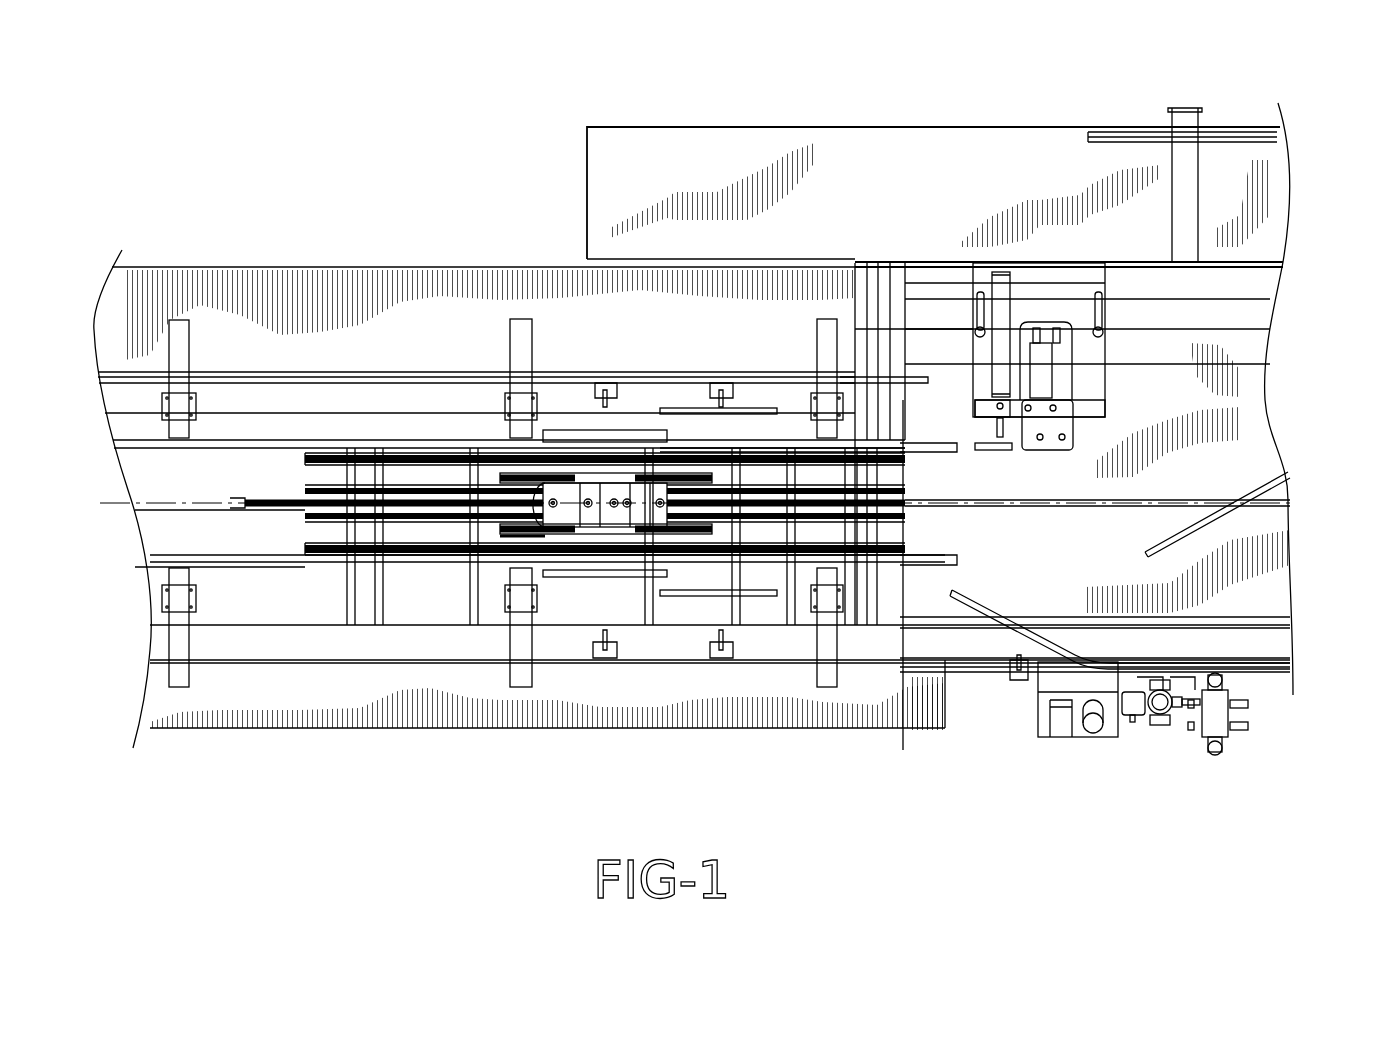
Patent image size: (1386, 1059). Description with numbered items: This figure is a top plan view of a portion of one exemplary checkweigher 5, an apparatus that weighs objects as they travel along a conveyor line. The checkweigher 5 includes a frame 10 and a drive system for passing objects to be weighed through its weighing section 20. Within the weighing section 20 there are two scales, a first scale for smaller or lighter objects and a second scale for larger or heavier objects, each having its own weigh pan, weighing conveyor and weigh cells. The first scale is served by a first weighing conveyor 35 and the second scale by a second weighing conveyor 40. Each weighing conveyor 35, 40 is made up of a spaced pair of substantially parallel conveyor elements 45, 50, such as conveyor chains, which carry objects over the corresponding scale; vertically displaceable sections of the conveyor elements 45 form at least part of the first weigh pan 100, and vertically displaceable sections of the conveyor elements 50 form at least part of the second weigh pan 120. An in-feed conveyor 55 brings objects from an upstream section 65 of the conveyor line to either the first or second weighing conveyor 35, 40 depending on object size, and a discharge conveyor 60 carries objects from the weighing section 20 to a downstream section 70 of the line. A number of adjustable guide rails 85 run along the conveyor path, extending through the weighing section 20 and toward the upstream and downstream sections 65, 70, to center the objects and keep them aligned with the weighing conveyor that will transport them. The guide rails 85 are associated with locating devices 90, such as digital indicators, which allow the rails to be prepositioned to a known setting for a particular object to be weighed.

The checkweigher 5 is at (258, 128).
The frame 10 is at (995, 648).
The weighing section 20 is at (578, 425).
The first weighing conveyor 35 is at (490, 537).
The second weighing conveyor 40 is at (400, 440).
The conveyor elements 45 is at (508, 470).
The conveyor elements 50 is at (328, 456).
The in-feed conveyor 55 is at (297, 525).
The discharge conveyor 60 is at (930, 525).
The upstream section 65 is at (130, 358).
The downstream section 70 is at (1255, 253).
The adjustable guide rails 85 is at (287, 450).
The locating devices 90 is at (183, 350).
The first weigh pan 100 is at (640, 470).
The second weigh pan 120 is at (723, 447).